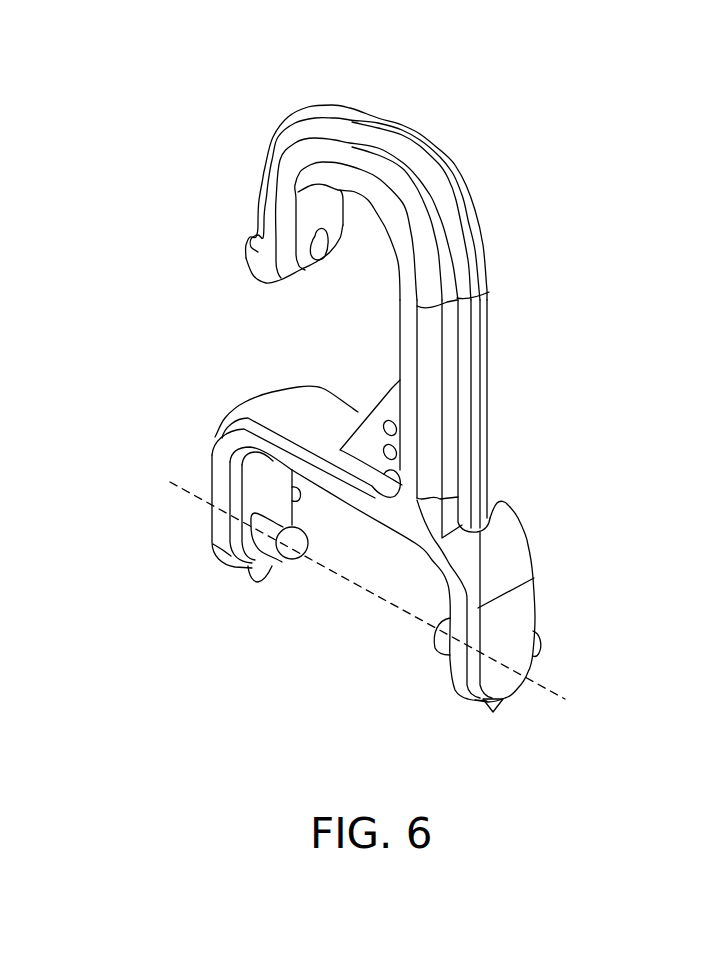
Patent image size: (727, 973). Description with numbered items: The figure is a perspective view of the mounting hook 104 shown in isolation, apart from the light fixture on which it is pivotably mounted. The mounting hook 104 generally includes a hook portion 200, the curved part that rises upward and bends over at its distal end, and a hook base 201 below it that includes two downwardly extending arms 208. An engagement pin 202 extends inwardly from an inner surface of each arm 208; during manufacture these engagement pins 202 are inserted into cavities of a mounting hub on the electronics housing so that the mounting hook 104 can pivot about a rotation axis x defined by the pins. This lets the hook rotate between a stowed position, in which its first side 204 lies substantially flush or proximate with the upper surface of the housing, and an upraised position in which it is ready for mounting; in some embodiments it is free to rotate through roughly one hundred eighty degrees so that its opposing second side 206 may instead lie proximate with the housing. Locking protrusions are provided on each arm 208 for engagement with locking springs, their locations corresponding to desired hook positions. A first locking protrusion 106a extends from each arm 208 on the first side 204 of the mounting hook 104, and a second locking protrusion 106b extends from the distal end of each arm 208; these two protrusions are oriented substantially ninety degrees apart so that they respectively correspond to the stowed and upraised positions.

The mounting hook 104 is at (109, 56).
The hook portion 200 is at (460, 259).
The hook base 201 is at (282, 408).
The engagement pin 202 is at (288, 563).
The first side 204 is at (442, 160).
The second side 206 is at (280, 182).
The arm 208 is at (212, 476).
The first locking protrusion 106a is at (297, 497).
The second locking protrusion 106b is at (255, 583).